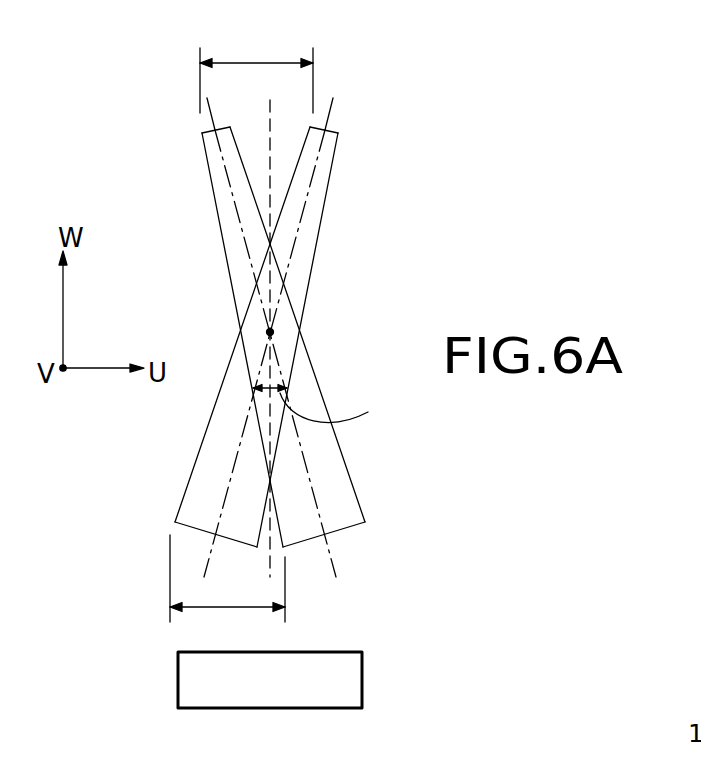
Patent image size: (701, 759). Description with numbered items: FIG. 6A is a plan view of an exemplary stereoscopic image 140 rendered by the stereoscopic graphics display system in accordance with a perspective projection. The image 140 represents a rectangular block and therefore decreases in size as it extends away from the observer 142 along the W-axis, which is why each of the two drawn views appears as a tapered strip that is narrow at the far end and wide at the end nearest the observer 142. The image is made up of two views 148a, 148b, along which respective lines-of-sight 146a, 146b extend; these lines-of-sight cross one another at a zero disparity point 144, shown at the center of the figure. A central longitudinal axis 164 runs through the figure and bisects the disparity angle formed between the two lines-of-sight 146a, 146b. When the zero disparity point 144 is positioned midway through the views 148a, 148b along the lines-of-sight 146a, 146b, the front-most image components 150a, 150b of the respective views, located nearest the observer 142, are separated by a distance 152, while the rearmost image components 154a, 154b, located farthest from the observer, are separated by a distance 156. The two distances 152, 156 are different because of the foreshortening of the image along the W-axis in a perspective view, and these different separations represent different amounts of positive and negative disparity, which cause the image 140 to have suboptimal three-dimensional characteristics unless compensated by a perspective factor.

The stereoscopic image 140 is at (138, 560).
The observer 142 is at (365, 688).
The zero disparity point 144 is at (274, 332).
The line-of-sight 146a is at (222, 153).
The line-of-sight 146b is at (310, 191).
The view 148a is at (242, 295).
The view 148b is at (310, 265).
The front-most image component 150a is at (192, 527).
The front-most image component 150b is at (353, 527).
The distance 152 is at (252, 606).
The rearmost image component 154a is at (203, 133).
The rearmost image component 154b is at (334, 128).
The distance 156 is at (268, 62).
The central longitudinal axis 164 is at (276, 117).